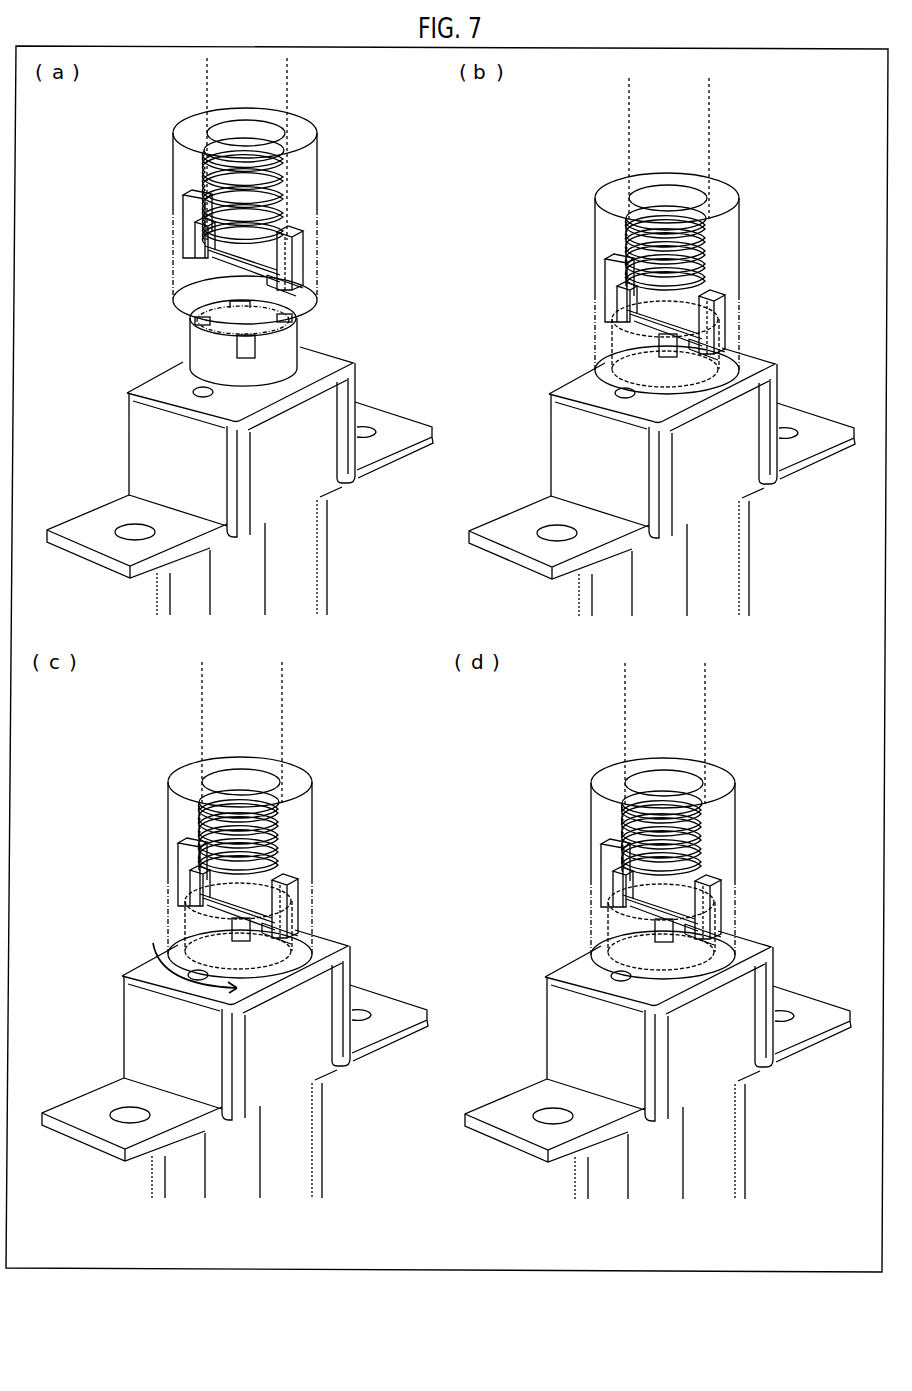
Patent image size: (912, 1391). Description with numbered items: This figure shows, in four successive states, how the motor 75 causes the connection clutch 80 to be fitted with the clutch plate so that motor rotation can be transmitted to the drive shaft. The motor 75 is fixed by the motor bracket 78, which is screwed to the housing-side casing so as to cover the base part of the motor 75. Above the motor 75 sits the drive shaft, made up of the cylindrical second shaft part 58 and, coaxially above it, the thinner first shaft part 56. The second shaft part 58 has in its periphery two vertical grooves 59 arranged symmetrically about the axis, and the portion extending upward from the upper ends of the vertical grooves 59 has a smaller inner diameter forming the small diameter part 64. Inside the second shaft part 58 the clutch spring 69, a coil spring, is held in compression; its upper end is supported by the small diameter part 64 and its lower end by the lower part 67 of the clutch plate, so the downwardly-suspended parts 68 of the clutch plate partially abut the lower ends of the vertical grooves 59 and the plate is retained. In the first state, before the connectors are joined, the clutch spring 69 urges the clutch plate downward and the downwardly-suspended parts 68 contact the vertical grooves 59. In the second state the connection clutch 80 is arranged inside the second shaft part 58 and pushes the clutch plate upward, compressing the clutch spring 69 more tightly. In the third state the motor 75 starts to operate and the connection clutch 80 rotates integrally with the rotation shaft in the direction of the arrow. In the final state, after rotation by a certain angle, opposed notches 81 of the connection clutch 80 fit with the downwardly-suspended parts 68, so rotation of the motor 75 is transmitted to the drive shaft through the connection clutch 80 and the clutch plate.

The first shaft part 56 is at (278, 96).
The second shaft part 58 is at (183, 170).
The small diameter part 64 is at (283, 157).
The clutch spring 69 is at (283, 205).
The vertical grooves 59 is at (303, 237).
The lower part 67 is at (293, 253).
The downwardly-suspended parts 68 is at (297, 273).
The notches 81 is at (240, 343).
The connection clutch 80 is at (308, 365).
The motor bracket 78 is at (138, 452).
The motor 75 is at (322, 490).